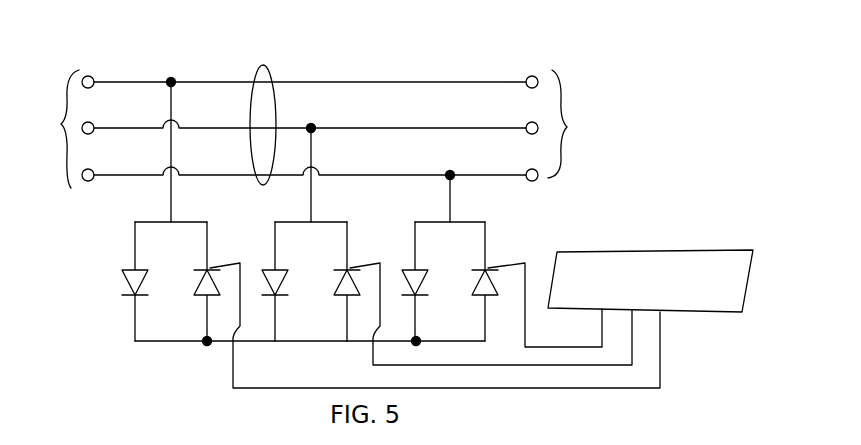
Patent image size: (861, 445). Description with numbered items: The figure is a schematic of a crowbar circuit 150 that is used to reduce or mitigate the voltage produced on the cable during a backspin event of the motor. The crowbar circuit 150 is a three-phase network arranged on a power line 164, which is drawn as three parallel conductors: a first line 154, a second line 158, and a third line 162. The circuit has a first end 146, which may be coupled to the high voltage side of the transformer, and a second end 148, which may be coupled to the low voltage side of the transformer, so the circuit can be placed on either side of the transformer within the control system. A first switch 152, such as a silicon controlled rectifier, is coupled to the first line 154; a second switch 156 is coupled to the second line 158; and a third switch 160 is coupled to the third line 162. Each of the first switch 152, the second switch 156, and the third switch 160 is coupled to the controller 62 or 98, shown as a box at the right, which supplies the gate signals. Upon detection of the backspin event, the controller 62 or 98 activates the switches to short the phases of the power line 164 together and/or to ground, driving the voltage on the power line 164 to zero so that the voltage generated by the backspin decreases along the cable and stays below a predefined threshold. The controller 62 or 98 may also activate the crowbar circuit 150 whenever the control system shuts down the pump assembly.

The crowbar circuit 150 is at (481, 37).
The first end 146 is at (62, 129).
The second end 148 is at (562, 125).
The first line 154 is at (207, 81).
The second line 158 is at (353, 127).
The third line 162 is at (477, 175).
The power line 164 is at (277, 70).
The first switch 152 is at (197, 295).
The second switch 156 is at (339, 295).
The third switch 160 is at (481, 295).
The controller 62 is at (706, 313).
The controller 98 is at (650, 281).